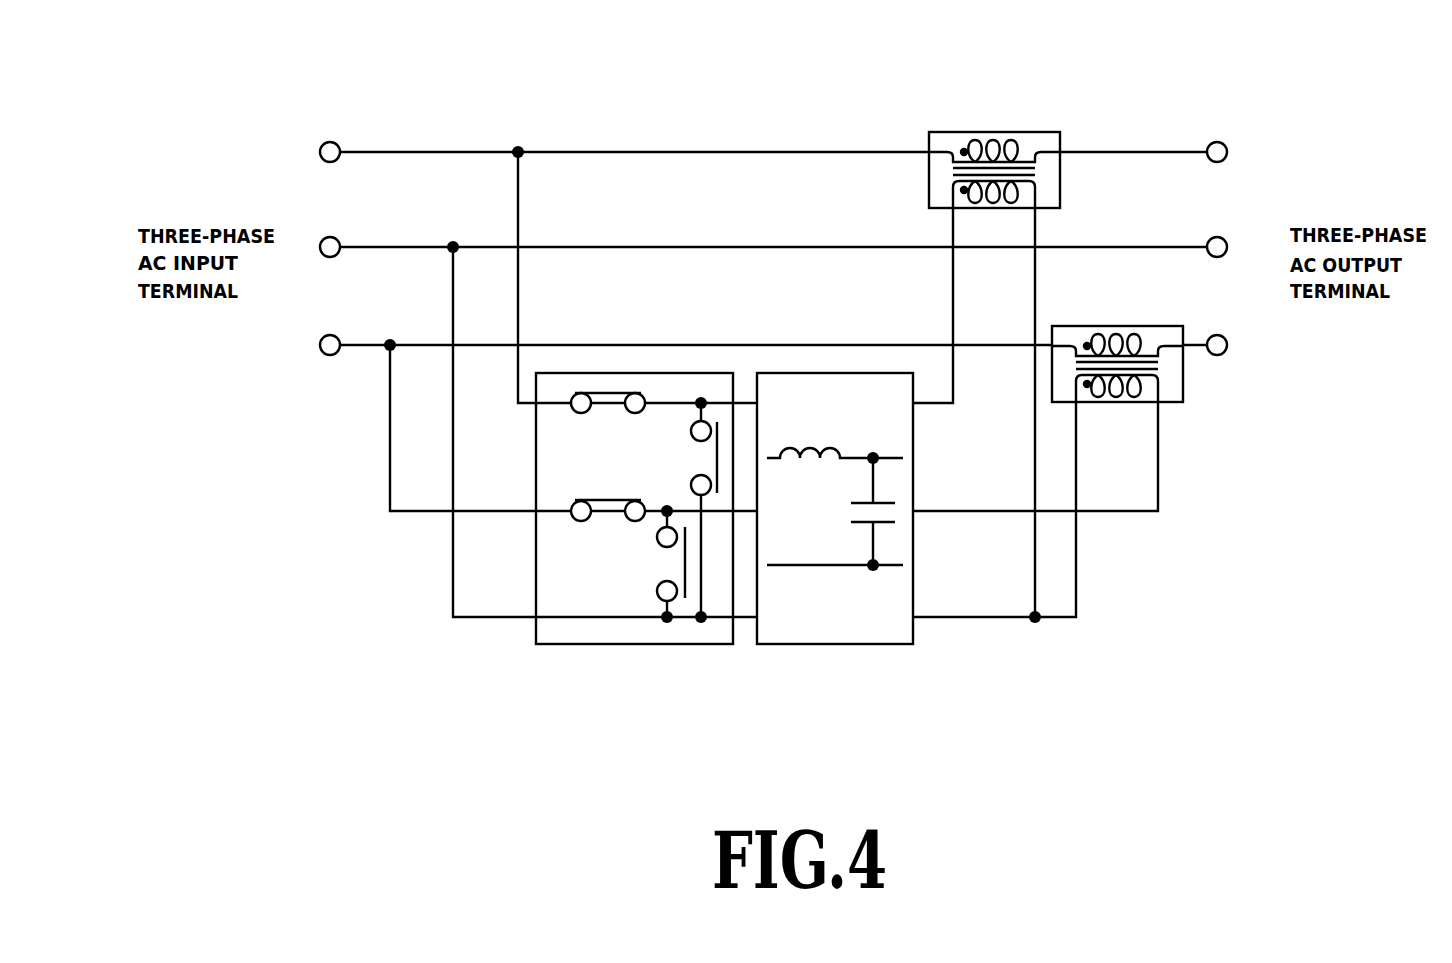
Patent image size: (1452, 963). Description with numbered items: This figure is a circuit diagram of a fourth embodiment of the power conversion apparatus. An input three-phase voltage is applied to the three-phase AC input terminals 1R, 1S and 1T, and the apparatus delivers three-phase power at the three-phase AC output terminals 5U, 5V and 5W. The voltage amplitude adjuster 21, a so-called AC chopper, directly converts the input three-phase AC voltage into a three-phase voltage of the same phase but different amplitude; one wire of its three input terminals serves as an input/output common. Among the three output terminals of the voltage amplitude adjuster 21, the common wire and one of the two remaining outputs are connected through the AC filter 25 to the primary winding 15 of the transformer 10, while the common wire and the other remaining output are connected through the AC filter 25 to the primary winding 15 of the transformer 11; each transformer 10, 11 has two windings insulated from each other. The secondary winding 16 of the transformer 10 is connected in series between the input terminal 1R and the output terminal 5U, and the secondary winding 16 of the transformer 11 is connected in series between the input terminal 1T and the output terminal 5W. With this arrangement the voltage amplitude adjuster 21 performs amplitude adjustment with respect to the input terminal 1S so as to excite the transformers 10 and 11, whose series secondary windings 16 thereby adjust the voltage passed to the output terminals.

The three-phase AC input terminal 1R is at (311, 156).
The three-phase AC input terminal 1S is at (311, 251).
The three-phase AC input terminal 1T is at (311, 349).
The three-phase AC output terminal 5U is at (1236, 155).
The three-phase AC output terminal V 5V is at (1236, 249).
The three-phase AC output terminal 5W is at (1236, 348).
The transformer 10 is at (992, 132).
The transformer 11 is at (1168, 402).
The primary winding 15 is at (1023, 202).
The secondary winding 16 is at (1012, 132).
The voltage amplitude adjuster 21 is at (632, 644).
The AC filter 25 is at (860, 644).